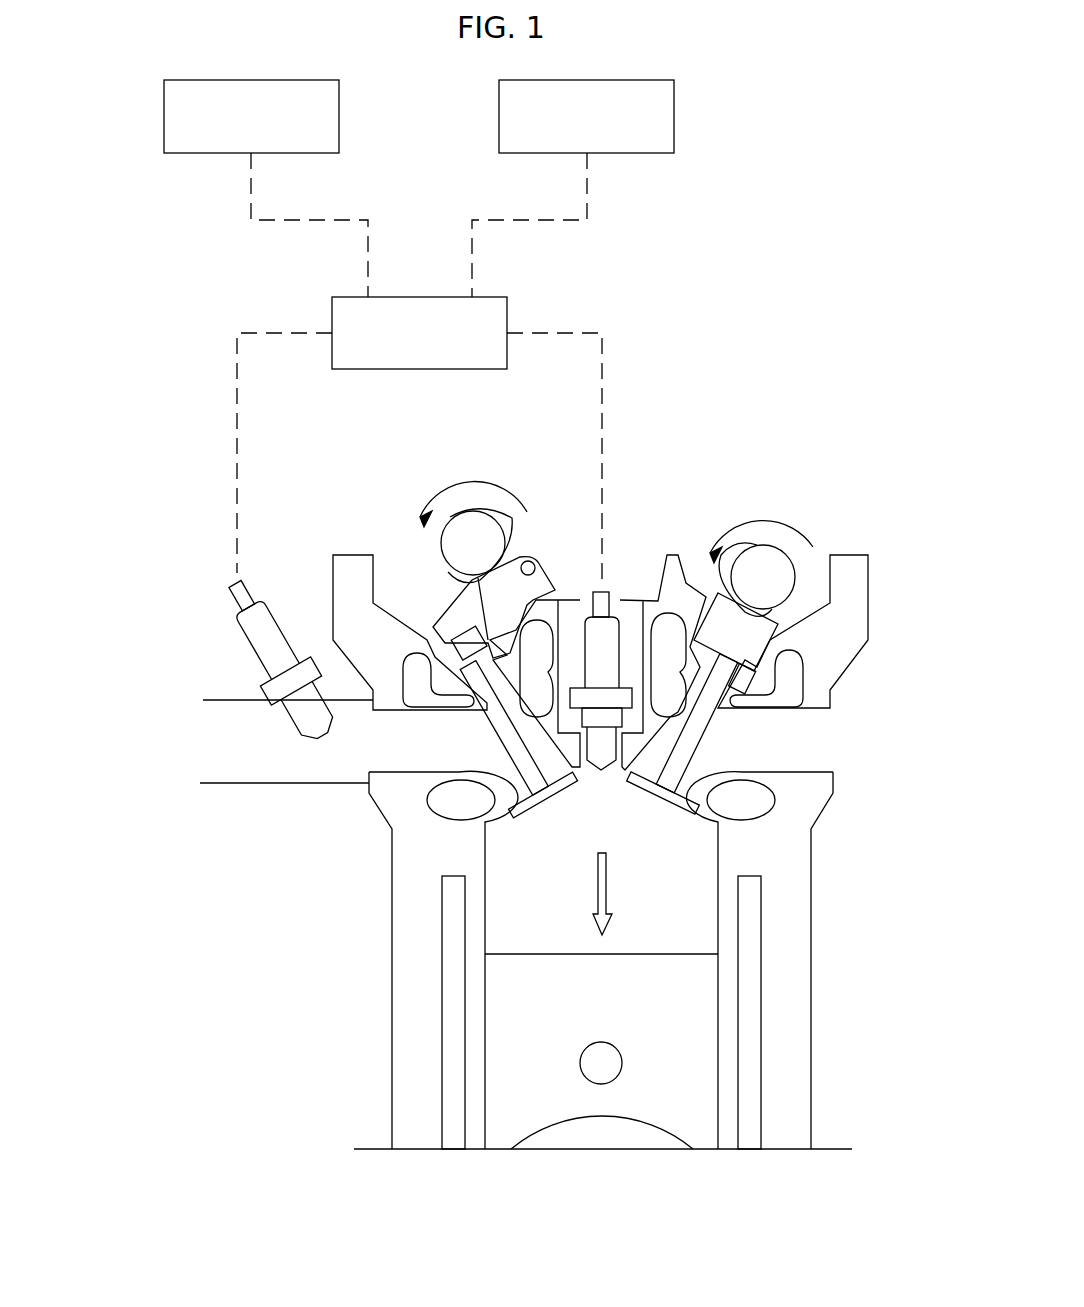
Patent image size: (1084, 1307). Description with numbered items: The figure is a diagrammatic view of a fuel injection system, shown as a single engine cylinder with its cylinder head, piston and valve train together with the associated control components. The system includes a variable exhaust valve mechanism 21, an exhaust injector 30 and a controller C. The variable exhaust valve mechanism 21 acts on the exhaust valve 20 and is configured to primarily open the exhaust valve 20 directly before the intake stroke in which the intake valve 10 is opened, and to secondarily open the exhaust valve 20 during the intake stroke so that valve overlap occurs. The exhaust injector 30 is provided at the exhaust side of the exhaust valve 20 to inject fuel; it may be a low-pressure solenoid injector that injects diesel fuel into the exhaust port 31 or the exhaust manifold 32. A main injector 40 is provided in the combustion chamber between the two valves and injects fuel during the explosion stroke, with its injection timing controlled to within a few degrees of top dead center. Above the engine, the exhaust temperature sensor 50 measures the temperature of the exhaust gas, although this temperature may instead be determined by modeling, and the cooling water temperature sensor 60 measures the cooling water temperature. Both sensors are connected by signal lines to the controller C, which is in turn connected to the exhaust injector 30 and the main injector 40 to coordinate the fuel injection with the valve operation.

The intake valve 10 is at (687, 742).
The exhaust valve 20 is at (525, 765).
The variable exhaust valve mechanism 21 is at (529, 545).
The exhaust injector 30 is at (267, 640).
The exhaust port 31 is at (383, 742).
The exhaust manifold 32 is at (242, 783).
The main injector 40 is at (607, 653).
The exhaust temperature sensor 50 is at (164, 113).
The cooling water temperature sensor 60 is at (674, 115).
The controller C is at (438, 297).